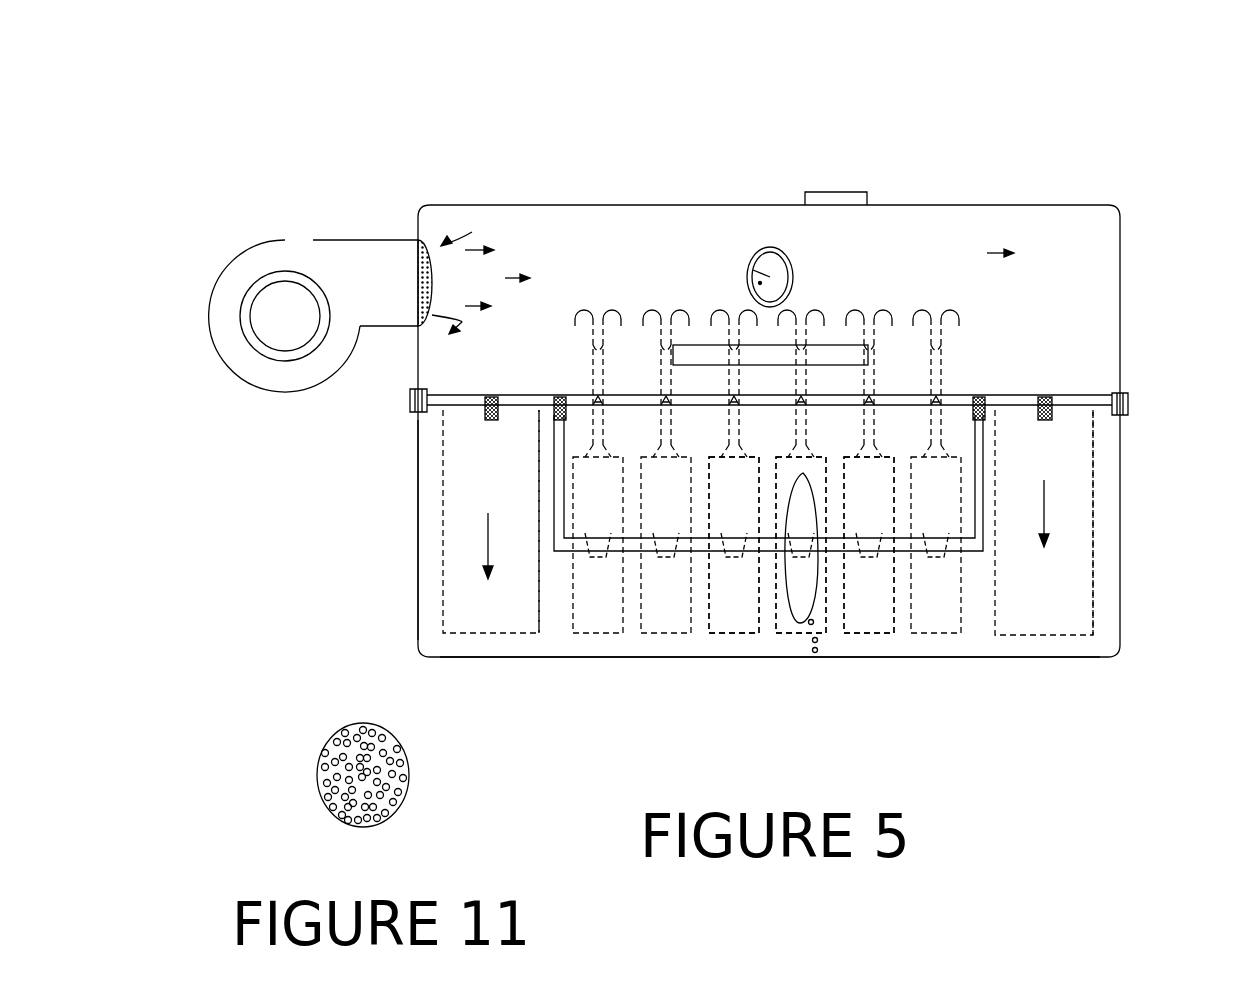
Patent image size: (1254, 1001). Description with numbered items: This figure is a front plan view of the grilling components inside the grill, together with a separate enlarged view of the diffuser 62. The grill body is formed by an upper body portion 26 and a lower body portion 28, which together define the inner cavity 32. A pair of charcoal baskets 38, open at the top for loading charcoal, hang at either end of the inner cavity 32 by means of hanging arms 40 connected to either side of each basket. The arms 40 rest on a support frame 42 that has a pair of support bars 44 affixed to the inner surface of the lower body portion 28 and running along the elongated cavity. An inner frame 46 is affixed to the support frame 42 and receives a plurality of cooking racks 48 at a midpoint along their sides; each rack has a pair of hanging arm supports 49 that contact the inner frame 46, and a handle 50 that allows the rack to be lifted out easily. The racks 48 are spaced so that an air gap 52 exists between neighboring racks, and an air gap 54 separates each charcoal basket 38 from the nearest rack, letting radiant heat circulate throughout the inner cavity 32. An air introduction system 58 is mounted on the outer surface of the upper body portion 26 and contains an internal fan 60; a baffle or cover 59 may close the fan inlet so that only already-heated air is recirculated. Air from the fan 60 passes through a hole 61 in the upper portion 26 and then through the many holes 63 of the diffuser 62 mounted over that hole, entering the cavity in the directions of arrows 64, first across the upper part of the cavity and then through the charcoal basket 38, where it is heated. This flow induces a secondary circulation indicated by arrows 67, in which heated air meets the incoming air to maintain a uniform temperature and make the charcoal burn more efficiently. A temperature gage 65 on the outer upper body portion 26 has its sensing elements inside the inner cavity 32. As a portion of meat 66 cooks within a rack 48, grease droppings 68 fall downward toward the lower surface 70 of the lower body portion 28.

In FIG. 5, the upper body portion 26 is at (940, 205).
In FIG. 5, the lower body portion 28 is at (418, 505).
In FIG. 5, the inner cavity 32 is at (787, 234).
In FIG. 5, the charcoal basket 38 is at (541, 393).
In FIG. 5, the hanging arm 40 is at (502, 392).
In FIG. 5, the support frame 42 is at (436, 408).
In FIG. 5, the support bar 44 is at (452, 392).
In FIG. 5, the inner frame 46 is at (986, 425).
In FIG. 5, the cooking rack 48 is at (743, 635).
In FIG. 5, the hanging arm support 49 is at (599, 556).
In FIG. 5, the handle 50 is at (608, 332).
In FIG. 5, the air gap 52 is at (700, 618).
In FIG. 5, the air gap 54 is at (548, 618).
In FIG. 5, the air introduction system 58 is at (260, 390).
In FIG. 5, the baffle or cover 59 is at (310, 270).
In FIG. 5, the internal fan 60 is at (248, 325).
In FIG. 5, the hole 61 is at (838, 192).
In FIG. 5, the diffuser 62 is at (431, 280).
In FIG. 11, the diffuser 62 is at (402, 747).
In FIG. 11, the holes 63 is at (357, 735).
In FIG. 5, the arrows 64 is at (490, 250).
In FIG. 5, the temperature gage 65 is at (792, 260).
In FIG. 5, the portion of meat 66 is at (813, 490).
In FIG. 5, the arrows 67 is at (1000, 251).
In FIG. 5, the grease droppings 68 is at (820, 652).
In FIG. 5, the lower surface 70 is at (672, 655).